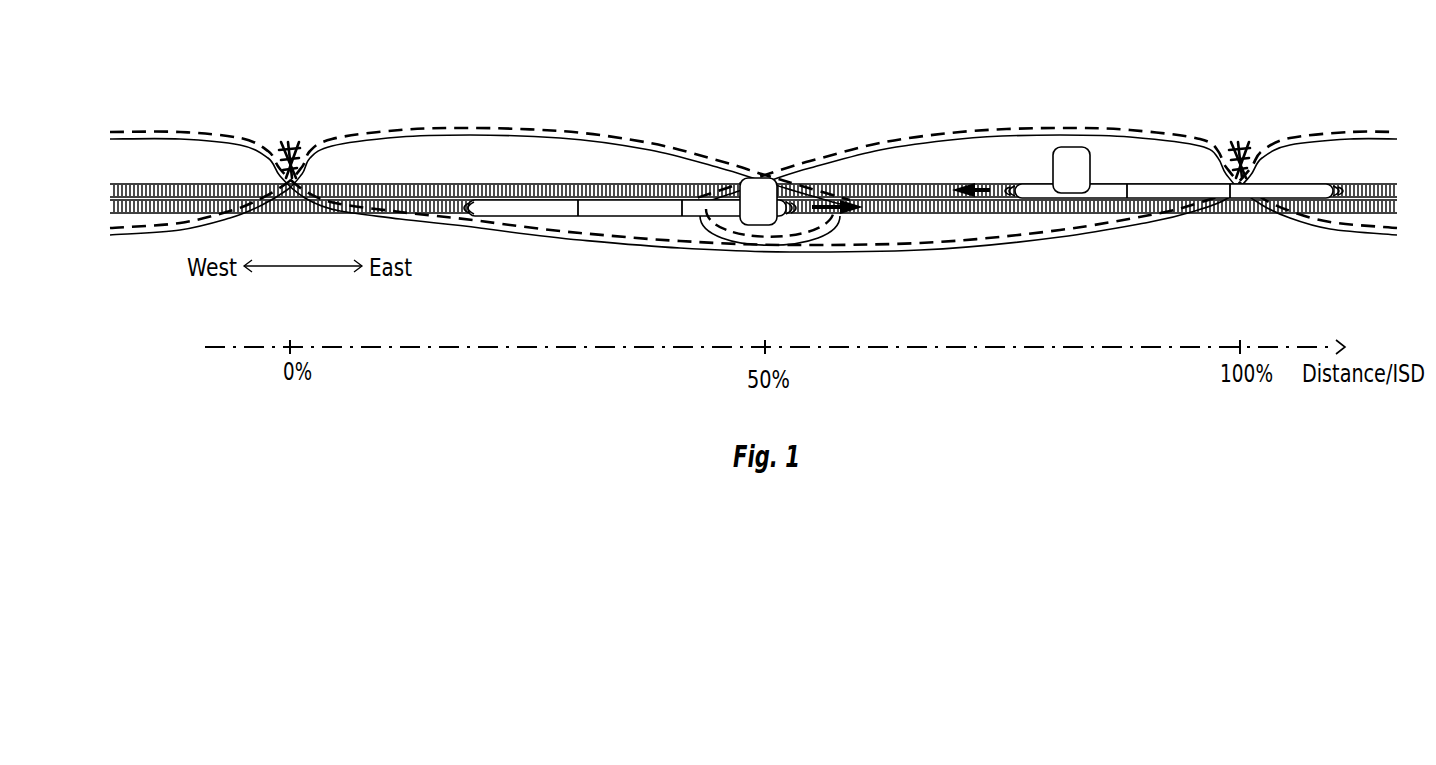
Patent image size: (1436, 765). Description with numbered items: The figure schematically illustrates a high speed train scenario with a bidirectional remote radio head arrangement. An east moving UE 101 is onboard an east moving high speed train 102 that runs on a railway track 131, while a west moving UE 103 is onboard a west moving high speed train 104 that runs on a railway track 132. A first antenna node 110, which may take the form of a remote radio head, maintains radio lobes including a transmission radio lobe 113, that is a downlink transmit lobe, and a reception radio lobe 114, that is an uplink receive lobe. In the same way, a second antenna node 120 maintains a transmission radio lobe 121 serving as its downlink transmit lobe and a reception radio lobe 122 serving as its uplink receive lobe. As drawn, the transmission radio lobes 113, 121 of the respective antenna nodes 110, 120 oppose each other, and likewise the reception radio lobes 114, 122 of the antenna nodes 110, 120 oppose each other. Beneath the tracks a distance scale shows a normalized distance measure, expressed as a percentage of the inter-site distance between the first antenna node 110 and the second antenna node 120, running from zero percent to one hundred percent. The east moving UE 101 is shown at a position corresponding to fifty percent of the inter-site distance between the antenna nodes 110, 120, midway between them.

The east moving UE 101 is at (757, 177).
The east moving high speed train 102 is at (506, 218).
The west moving UE 103 is at (1070, 146).
The west moving high speed train 104 is at (1255, 197).
The first antenna node 110 is at (288, 141).
The transmission radio lobe 113 is at (453, 137).
The reception radio lobe 114 is at (383, 131).
The second antenna node 120 is at (1245, 141).
The transmission radio lobe 121 is at (1065, 237).
The reception radio lobe 122 is at (1140, 131).
The railway track 131 is at (915, 185).
The railway track 132 is at (903, 215).